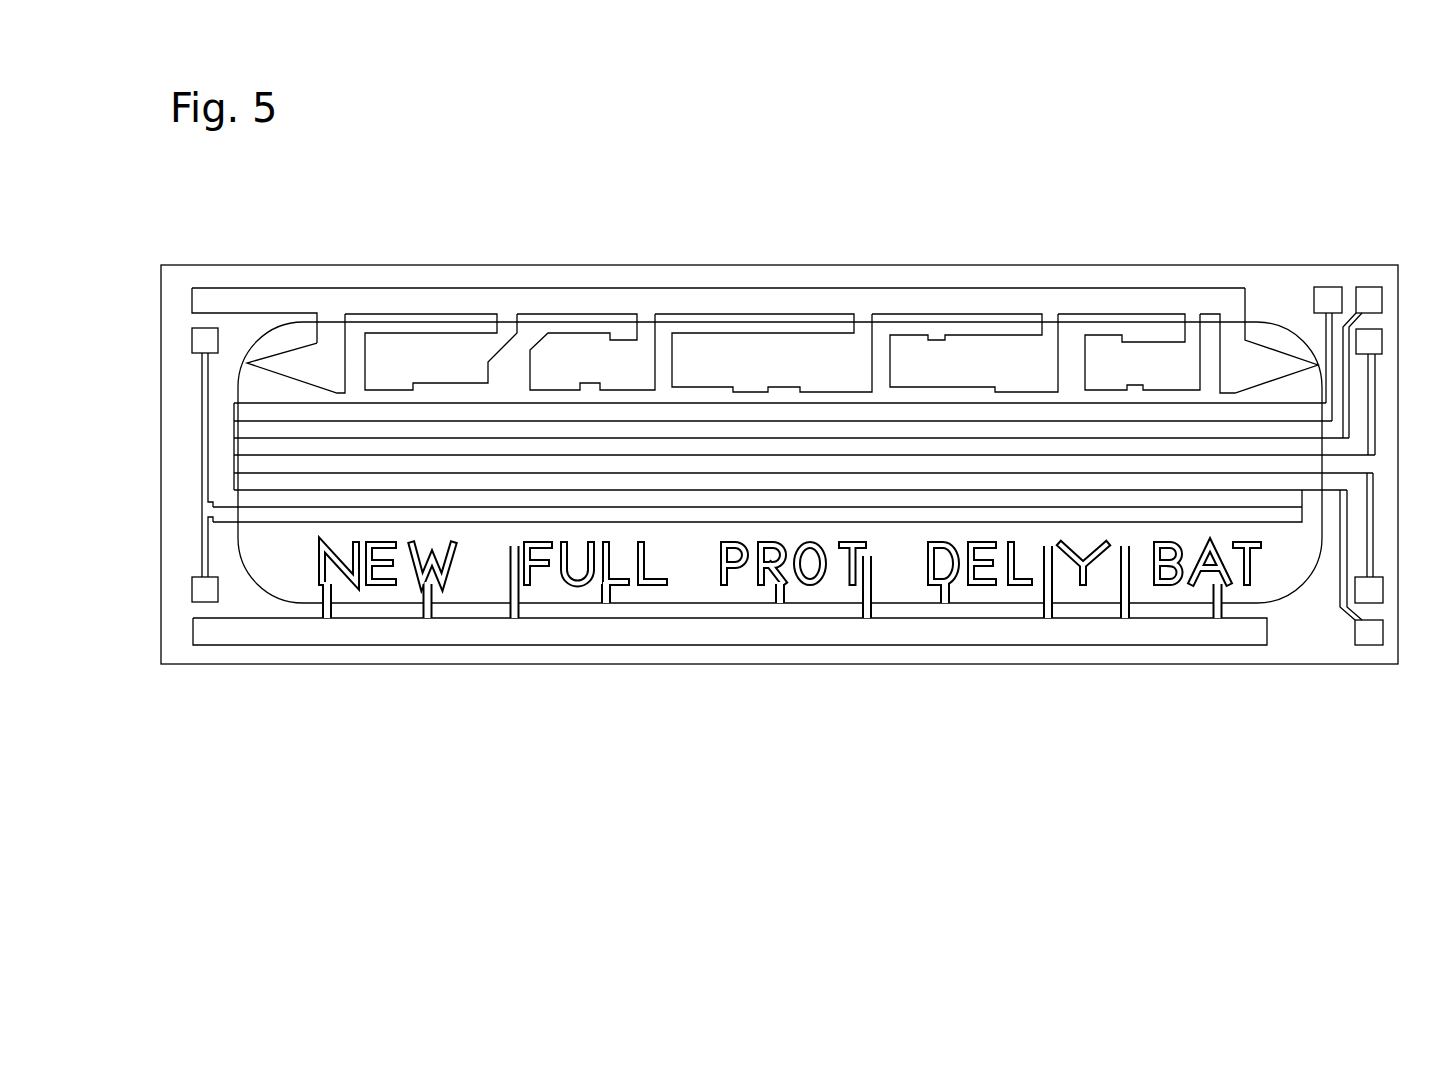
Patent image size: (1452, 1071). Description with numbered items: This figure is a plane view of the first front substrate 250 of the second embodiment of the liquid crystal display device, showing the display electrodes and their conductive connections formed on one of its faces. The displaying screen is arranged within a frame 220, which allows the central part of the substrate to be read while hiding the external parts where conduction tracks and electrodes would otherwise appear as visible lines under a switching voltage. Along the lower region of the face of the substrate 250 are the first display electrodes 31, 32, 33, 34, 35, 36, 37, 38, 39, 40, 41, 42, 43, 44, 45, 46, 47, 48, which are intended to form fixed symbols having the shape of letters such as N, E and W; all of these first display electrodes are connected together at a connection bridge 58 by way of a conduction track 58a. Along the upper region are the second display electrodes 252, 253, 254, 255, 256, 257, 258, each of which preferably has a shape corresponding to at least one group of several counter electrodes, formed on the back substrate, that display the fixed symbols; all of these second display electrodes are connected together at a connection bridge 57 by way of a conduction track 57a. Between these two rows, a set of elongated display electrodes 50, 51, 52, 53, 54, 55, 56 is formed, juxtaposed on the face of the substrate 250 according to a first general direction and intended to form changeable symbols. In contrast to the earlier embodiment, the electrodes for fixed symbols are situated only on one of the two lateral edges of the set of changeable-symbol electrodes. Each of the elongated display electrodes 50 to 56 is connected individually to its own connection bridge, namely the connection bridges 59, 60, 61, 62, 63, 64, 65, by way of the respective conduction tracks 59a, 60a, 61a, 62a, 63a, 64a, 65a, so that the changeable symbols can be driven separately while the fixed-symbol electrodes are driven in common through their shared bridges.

The first front substrate 250 is at (1392, 140).
The frame 220 is at (1322, 548).
The first display electrode 31 is at (325, 587).
The first display electrode 32 is at (378, 573).
The first display electrode 33 is at (452, 575).
The first display electrode 34 is at (527, 578).
The first display electrode 35 is at (558, 578).
The first display electrode 36 is at (615, 578).
The first display electrode 37 is at (657, 578).
The first display electrode 38 is at (735, 568).
The first display electrode 39 is at (760, 572).
The first display electrode 40 is at (818, 578).
The first display electrode 41 is at (866, 558).
The first display electrode 42 is at (945, 585).
The first display electrode 43 is at (985, 588).
The first display electrode 44 is at (1022, 585).
The first display electrode 45 is at (1108, 565).
The first display electrode 46 is at (1175, 578).
The first display electrode 47 is at (1210, 568).
The first display electrode 48 is at (1258, 565).
The elongated display electrode 50 is at (237, 413).
The elongated display electrode 51 is at (237, 432).
The elongated display electrode 52 is at (237, 450).
The elongated display electrode 53 is at (237, 468).
The elongated display electrode 54 is at (237, 485).
The elongated display electrode 55 is at (212, 500).
The elongated display electrode 56 is at (205, 520).
The connection bridge 57 is at (202, 298).
The conduction track 57a is at (676, 276).
The connection bridge 58 is at (203, 633).
The conduction track 58a is at (695, 635).
The connection bridge 59 is at (1325, 298).
The conduction track 59a is at (1326, 342).
The connection bridge 60 is at (1368, 295).
The conduction track 60a is at (1345, 365).
The connection bridge 61 is at (1382, 337).
The conduction track 61a is at (1372, 392).
The connection bridge 62 is at (1377, 590).
The conduction track 62a is at (1372, 488).
The connection bridge 63 is at (1365, 637).
The conduction track 63a is at (1343, 563).
The connection bridge 64 is at (202, 340).
The conduction track 64a is at (202, 388).
The connection bridge 65 is at (197, 590).
The conduction track 65a is at (205, 553).
The second display electrode 252 is at (293, 357).
The second display electrode 253 is at (435, 343).
The second display electrode 254 is at (573, 343).
The second display electrode 255 is at (745, 348).
The second display electrode 256 is at (988, 343).
The second display electrode 257 is at (1133, 347).
The second display electrode 258 is at (1268, 357).